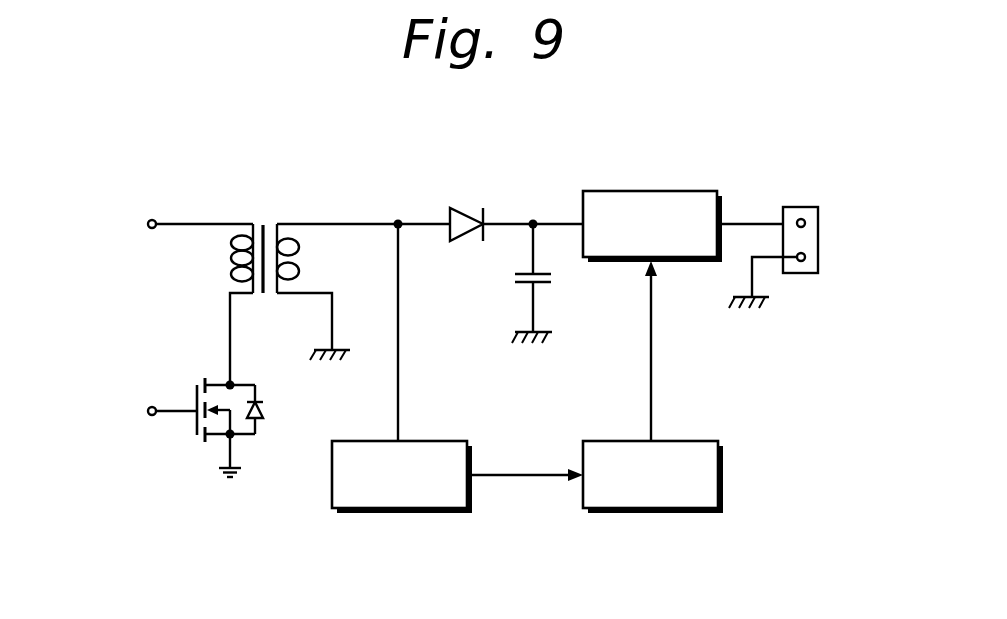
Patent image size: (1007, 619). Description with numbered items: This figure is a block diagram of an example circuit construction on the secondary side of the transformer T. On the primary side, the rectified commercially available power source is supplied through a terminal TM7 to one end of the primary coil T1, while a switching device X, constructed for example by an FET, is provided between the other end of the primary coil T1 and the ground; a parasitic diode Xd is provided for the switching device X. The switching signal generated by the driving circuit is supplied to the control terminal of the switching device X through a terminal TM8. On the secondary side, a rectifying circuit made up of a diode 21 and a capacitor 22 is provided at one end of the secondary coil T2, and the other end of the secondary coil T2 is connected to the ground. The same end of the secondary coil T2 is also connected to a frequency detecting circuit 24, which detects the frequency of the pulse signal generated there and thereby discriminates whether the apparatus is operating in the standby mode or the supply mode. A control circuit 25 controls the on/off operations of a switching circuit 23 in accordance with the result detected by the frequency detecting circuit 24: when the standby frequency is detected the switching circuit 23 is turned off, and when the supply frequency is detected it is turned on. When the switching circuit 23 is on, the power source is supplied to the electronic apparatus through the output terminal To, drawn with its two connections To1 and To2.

The transformer T is at (308, 250).
The primary coil T1 is at (248, 223).
The secondary coil T2 is at (337, 265).
The terminal TM7 is at (146, 224).
The terminal TM8 is at (146, 411).
The switching device X is at (203, 377).
The parasitic diode Xd is at (267, 409).
The diode 21 is at (472, 208).
The capacitor 22 is at (515, 278).
The switching circuit 23 is at (648, 190).
The frequency detecting circuit 24 is at (445, 440).
The control circuit 25 is at (697, 440).
The output terminal To is at (814, 226).
The output terminal To1 is at (805, 223).
The output terminal To2 is at (805, 257).